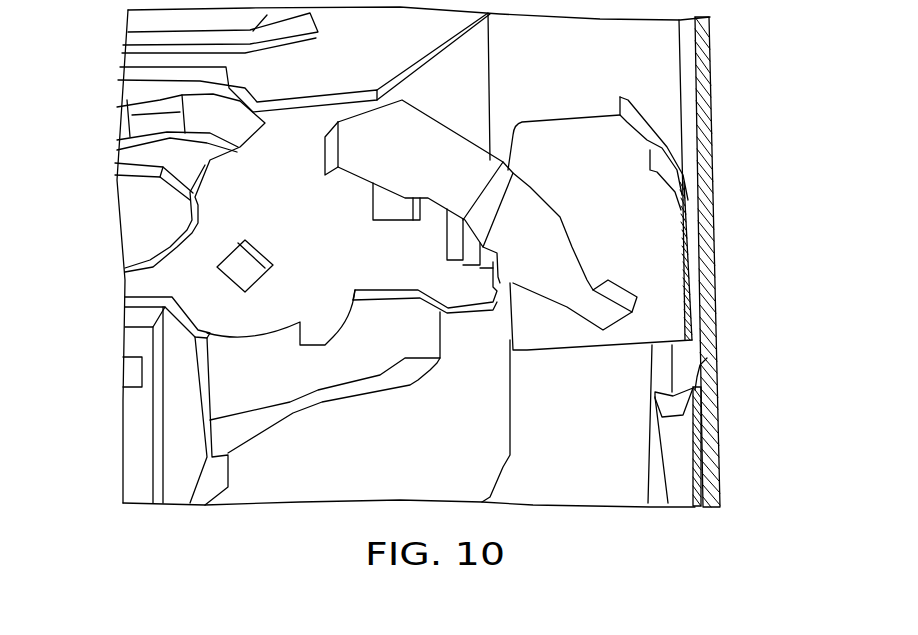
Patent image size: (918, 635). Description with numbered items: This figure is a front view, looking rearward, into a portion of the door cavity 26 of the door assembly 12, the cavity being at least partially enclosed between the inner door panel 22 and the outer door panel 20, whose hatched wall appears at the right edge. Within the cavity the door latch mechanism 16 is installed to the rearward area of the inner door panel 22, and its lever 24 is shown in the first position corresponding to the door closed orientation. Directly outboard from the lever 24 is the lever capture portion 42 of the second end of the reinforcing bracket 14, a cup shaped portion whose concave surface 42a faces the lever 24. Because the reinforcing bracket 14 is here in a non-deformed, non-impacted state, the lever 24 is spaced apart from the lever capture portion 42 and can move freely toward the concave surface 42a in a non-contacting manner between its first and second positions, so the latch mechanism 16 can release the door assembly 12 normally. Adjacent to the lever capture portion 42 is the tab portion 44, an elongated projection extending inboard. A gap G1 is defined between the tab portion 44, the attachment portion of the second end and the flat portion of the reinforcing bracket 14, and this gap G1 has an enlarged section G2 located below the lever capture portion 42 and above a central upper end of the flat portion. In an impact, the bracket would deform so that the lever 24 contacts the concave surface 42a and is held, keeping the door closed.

The door assembly 12 is at (118, 212).
The reinforcing bracket 14 is at (677, 450).
The door latch mechanism 16 is at (142, 283).
The outer door panel 20 is at (717, 195).
The inner door panel 22 is at (140, 437).
The lever 24 is at (435, 155).
The door cavity 26 is at (280, 467).
The lever capture portion 42 is at (645, 127).
The concave surface 42a is at (682, 243).
The tab portion 44 is at (552, 327).
The gap G1 is at (707, 358).
The enlarged section G2 is at (667, 402).